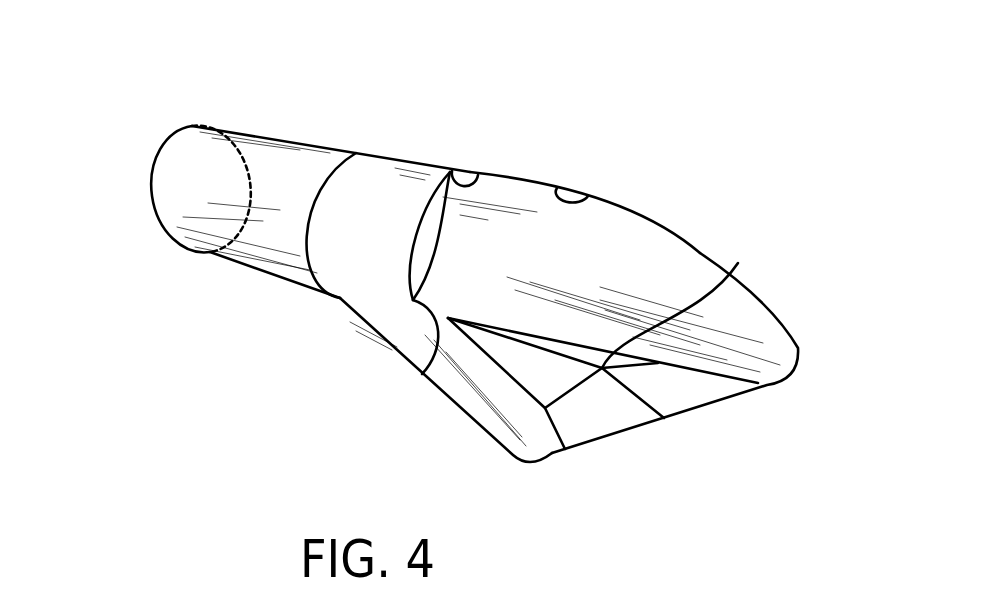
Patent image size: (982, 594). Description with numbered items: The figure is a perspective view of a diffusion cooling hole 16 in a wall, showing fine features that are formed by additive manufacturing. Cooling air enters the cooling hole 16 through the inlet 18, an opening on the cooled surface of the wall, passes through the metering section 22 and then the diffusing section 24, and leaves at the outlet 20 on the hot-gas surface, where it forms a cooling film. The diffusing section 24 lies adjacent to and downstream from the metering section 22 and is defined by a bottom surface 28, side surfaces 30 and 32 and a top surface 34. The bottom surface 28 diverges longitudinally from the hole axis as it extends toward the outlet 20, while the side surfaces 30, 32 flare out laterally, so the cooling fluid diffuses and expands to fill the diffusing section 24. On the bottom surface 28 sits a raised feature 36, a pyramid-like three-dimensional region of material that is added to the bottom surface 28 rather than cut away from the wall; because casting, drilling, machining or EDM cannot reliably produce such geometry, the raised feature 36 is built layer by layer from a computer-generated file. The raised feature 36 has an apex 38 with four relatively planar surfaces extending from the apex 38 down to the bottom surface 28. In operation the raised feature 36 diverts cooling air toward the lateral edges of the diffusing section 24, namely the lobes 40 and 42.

The cooling hole 16 is at (523, 107).
The inlet 18 is at (200, 189).
The outlet 20 is at (765, 299).
The metering section 22 is at (282, 279).
The diffusing section 24 is at (636, 252).
The bottom surface 28 is at (573, 414).
The side surface 30 is at (437, 328).
The side surface 32 is at (585, 197).
The top surface 34 is at (482, 175).
The raised feature 36 is at (668, 393).
The apex 38 is at (679, 304).
The lobe 40 is at (470, 396).
The lobe 42 is at (733, 335).